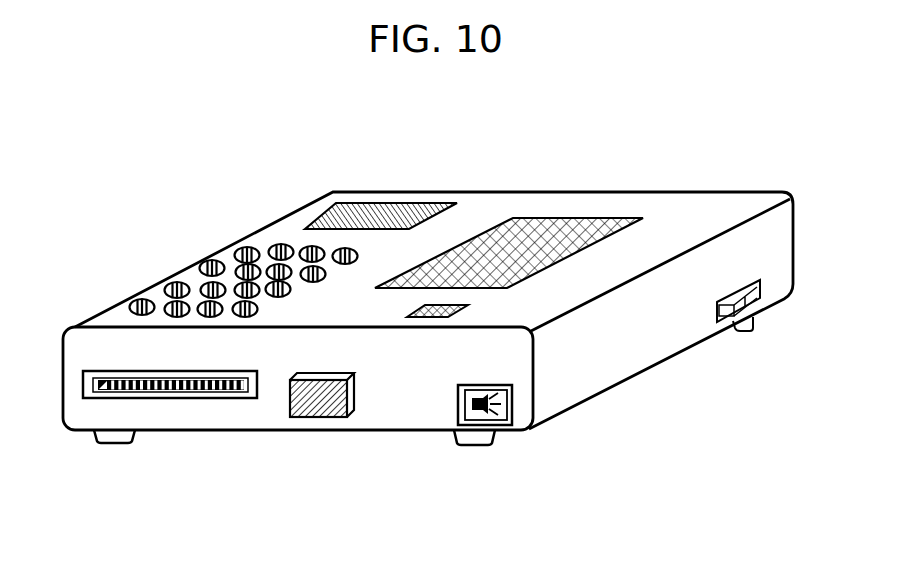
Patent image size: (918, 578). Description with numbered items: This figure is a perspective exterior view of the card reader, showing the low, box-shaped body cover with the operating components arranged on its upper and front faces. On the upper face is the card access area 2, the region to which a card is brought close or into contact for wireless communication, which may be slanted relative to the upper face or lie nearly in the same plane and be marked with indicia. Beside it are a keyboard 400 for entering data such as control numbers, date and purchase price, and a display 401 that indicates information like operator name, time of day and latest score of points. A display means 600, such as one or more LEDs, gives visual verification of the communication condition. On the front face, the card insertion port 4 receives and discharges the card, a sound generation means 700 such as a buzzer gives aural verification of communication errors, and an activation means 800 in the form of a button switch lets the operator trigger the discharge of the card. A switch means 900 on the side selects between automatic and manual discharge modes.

The card access area 2 is at (352, 203).
The card insertion port 4 is at (190, 398).
The keyboard 400 is at (198, 268).
The display 401 is at (565, 220).
The display means 600 is at (427, 316).
The sound generation means 700 is at (493, 423).
The activation means 800 is at (263, 432).
The switch means 900 is at (740, 310).